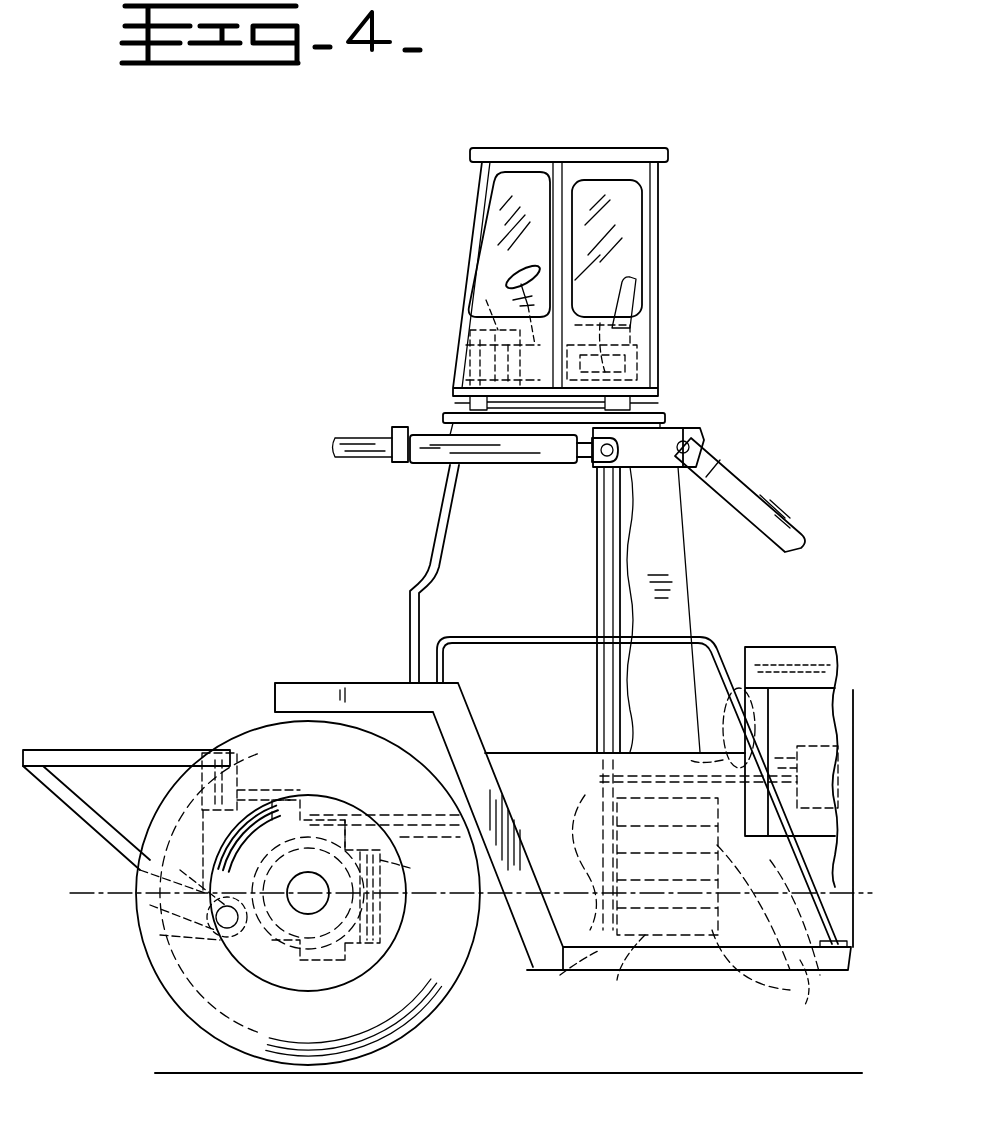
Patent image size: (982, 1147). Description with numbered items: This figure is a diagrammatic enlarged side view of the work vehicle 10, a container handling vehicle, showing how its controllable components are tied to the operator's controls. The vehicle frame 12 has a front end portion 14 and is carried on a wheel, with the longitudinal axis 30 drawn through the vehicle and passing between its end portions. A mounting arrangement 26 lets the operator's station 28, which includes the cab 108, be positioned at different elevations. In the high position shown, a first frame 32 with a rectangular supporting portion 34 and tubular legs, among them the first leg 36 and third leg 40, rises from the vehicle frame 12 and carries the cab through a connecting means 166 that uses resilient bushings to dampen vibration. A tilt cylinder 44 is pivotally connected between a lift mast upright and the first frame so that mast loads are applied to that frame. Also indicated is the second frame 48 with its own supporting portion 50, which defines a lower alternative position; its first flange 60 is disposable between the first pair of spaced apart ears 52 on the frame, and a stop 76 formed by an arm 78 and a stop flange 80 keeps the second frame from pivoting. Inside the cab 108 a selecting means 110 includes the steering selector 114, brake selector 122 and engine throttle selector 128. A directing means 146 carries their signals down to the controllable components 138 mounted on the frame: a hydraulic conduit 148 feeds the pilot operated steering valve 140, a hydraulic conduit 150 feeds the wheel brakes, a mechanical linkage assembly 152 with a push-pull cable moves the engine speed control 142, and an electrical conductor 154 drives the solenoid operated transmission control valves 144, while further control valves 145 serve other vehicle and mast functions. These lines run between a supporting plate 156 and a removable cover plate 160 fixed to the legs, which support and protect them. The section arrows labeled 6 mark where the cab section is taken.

The section line 6- 6 is at (272, 127).
The work vehicle 10 is at (757, 467).
The vehicle frame 12 is at (652, 963).
The front end portion 14 is at (282, 893).
The mounting arrangement 26 is at (108, 620).
The operator's station 28 is at (549, 272).
The longitudinal axis 30 is at (90, 892).
The first frame 32 is at (588, 706).
The supporting portion 34 is at (667, 418).
The first leg 36 is at (668, 582).
The third leg 40 is at (430, 543).
The tilt cylinder 44 is at (350, 435).
The second frame 48 is at (80, 822).
The supporting portion 50 is at (107, 750).
The first pair of spaced apart ears 52 is at (150, 960).
The first flange 60 is at (136, 926).
The stop 76 is at (298, 774).
The arm 78 is at (272, 762).
The stop flange 80 is at (327, 791).
The cab 108 is at (660, 282).
The selecting means 110 is at (490, 297).
The steering selector 114 is at (542, 268).
The brake selector 122 is at (640, 364).
The engine throttle selector 128 is at (602, 347).
The controllable components 138 is at (617, 982).
The pilot operated steering valve 140 is at (730, 977).
The engine speed control 142 is at (833, 746).
The transmission control valves 144 is at (812, 1002).
The control valves 145 is at (692, 760).
The directing means 146 is at (551, 609).
The hydraulic conduit 148 is at (556, 986).
The hydraulic conduit 150 is at (410, 868).
The mechanical linkage assembly 152 is at (742, 692).
The electrical conductor 154 is at (588, 793).
The supporting plate 156 is at (605, 534).
The cover plate 160 is at (598, 612).
The connecting means 166 is at (448, 401).